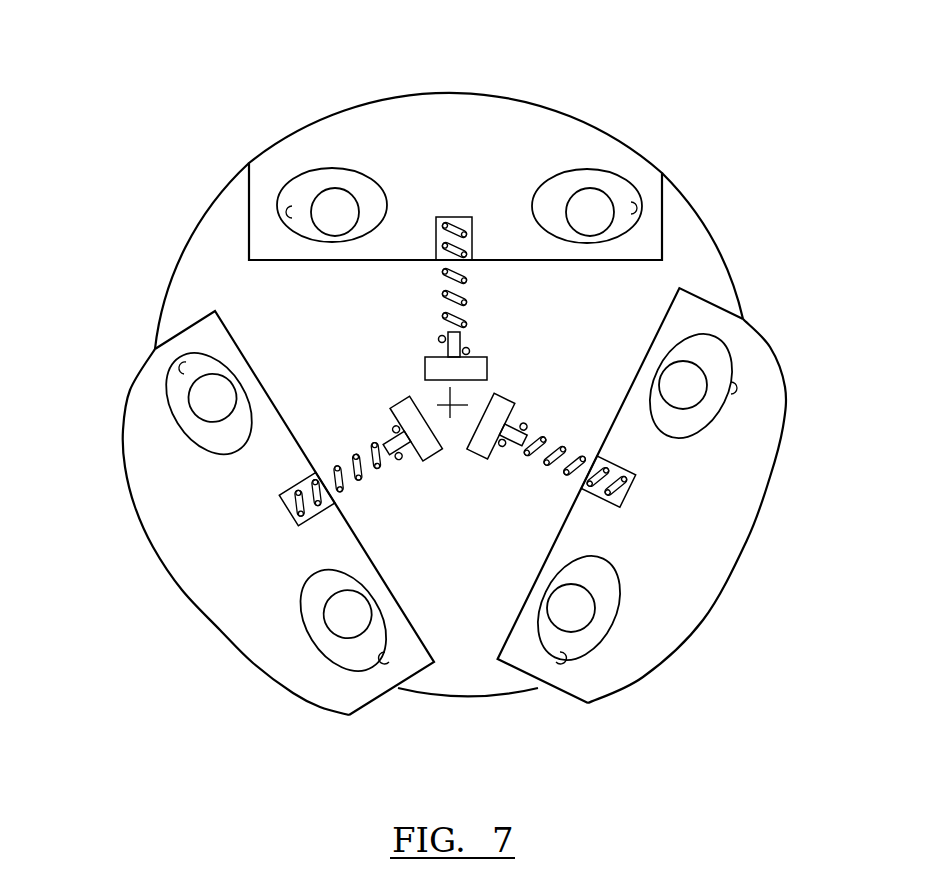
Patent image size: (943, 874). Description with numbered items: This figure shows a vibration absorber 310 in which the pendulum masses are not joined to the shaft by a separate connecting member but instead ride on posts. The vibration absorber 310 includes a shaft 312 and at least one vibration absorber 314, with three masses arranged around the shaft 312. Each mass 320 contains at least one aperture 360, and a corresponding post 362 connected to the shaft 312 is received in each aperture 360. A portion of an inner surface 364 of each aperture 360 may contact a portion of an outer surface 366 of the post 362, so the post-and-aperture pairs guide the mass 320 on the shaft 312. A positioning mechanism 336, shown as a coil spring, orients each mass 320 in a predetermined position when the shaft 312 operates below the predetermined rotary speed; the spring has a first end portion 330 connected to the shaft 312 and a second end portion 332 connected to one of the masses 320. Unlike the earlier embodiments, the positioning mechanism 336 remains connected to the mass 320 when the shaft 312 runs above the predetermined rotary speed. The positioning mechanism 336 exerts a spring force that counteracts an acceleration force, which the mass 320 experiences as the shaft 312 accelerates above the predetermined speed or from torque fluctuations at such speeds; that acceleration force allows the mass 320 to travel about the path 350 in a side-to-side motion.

The vibration absorber 310 is at (693, 54).
The shaft 312 is at (455, 697).
The vibration absorber 314 is at (281, 91).
The mass 320 is at (347, 140).
The first end portion 330 is at (425, 370).
The second end portion 332 is at (468, 235).
The positioning mechanism 336 is at (468, 307).
The path 350 is at (397, 75).
The aperture 360 is at (598, 178).
The post 362 is at (327, 207).
The inner surface 364 is at (633, 210).
The outer surface 366 is at (587, 190).